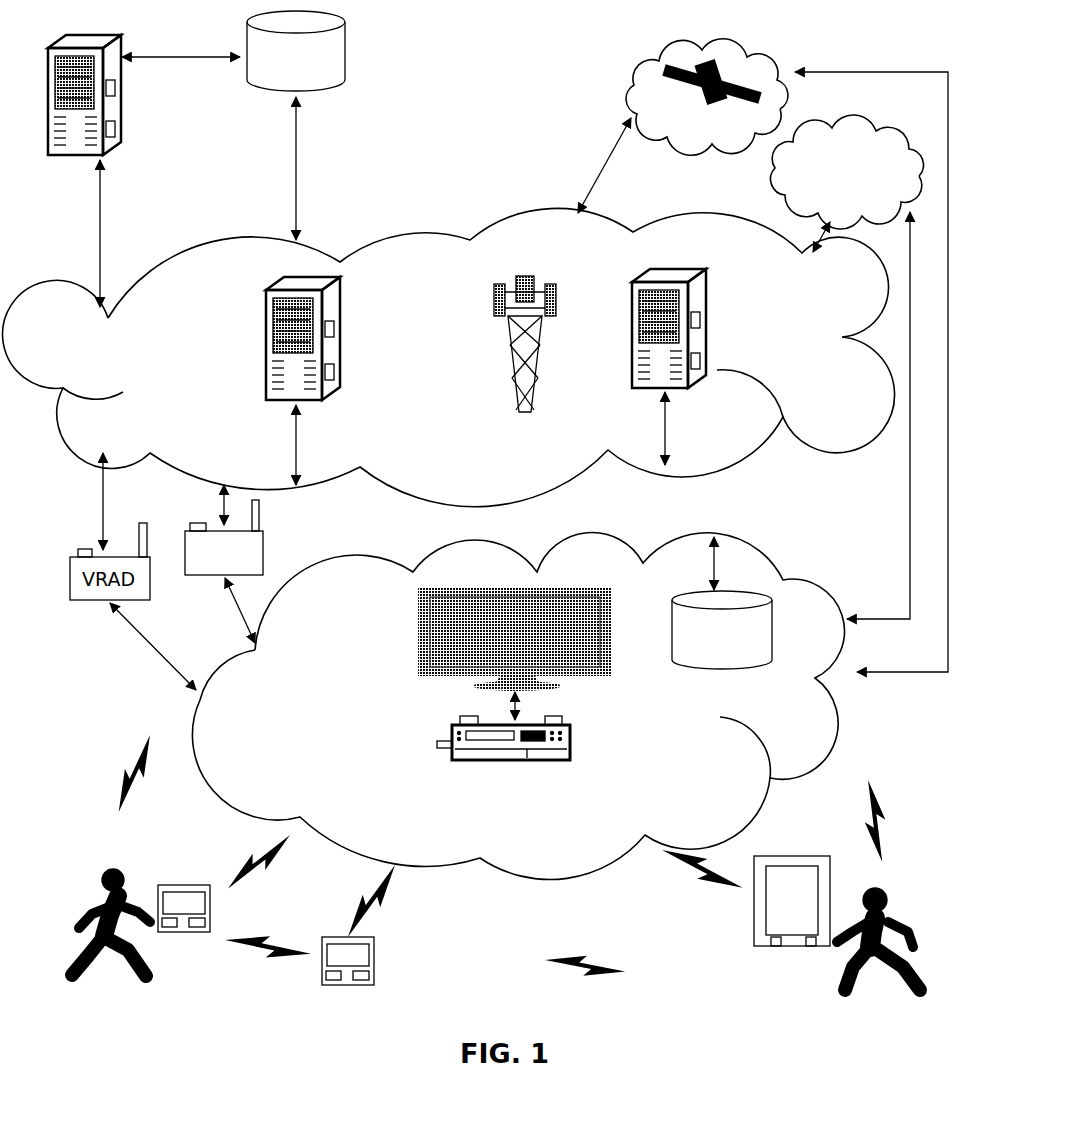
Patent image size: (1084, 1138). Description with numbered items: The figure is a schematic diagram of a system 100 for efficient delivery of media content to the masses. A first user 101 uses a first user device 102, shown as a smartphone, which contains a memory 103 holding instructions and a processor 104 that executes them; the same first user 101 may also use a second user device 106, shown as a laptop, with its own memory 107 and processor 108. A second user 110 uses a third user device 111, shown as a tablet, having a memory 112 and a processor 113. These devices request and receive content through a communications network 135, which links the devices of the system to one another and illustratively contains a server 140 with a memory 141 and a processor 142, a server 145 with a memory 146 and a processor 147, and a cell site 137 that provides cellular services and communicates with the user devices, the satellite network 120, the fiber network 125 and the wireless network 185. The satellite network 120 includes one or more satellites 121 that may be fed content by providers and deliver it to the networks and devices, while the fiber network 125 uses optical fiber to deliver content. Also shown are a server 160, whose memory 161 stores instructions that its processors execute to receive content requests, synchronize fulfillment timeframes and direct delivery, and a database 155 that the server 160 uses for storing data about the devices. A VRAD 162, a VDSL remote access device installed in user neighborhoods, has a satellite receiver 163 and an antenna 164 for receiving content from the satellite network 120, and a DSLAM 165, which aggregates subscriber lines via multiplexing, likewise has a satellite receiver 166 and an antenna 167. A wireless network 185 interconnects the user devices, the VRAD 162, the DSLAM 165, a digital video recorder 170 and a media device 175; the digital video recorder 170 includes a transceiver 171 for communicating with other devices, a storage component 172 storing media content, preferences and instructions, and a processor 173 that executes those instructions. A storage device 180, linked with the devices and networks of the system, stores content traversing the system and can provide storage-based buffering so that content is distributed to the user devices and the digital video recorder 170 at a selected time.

The system 100 is at (420, 150).
The first user 101 is at (80, 980).
The first user device 102 is at (185, 885).
The memory 103 is at (168, 927).
The processor 104 is at (197, 927).
The second user device 106 is at (374, 960).
The memory 107 is at (333, 985).
The processor 108 is at (360, 985).
The second user 110 is at (918, 996).
The third user device 111 is at (798, 856).
The memory 112 is at (775, 946).
The processor 113 is at (810, 946).
The satellite network 120 is at (622, 107).
The satellite 121 is at (668, 67).
The fiber network 125 is at (770, 187).
The communications network 135 is at (185, 248).
The cell site 137 is at (494, 287).
The server 140 is at (265, 315).
The memory 141 is at (335, 328).
The processor 142 is at (335, 372).
The server 145 is at (707, 285).
The memory 146 is at (701, 320).
The processor 147 is at (701, 361).
The database 155 is at (296, 51).
The server 160 is at (72, 156).
The memory 161 is at (116, 128).
The VRAD 162 is at (116, 88).
The satellite receiver 163 is at (78, 549).
The antenna 164 is at (142, 512).
The DSLAM 165 is at (195, 576).
The satellite receiver 166 is at (198, 522).
The antenna 167 is at (262, 520).
The digital video recorder 170 is at (510, 762).
The transceiver 171 is at (458, 718).
The storage component 172 is at (564, 718).
The processor 173 is at (441, 748).
The media device 175 is at (452, 588).
The storage device 180 is at (722, 630).
The wireless network 185 is at (805, 583).